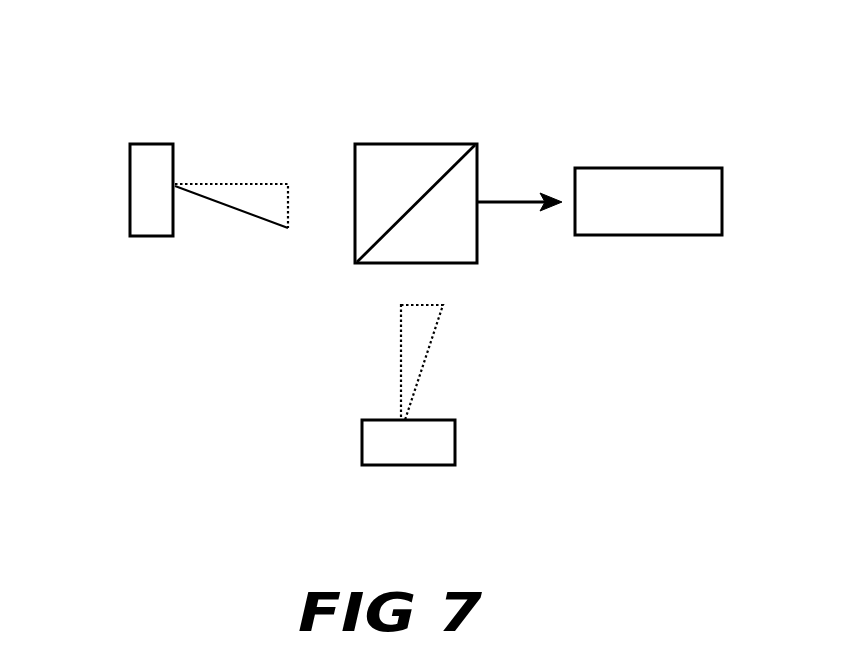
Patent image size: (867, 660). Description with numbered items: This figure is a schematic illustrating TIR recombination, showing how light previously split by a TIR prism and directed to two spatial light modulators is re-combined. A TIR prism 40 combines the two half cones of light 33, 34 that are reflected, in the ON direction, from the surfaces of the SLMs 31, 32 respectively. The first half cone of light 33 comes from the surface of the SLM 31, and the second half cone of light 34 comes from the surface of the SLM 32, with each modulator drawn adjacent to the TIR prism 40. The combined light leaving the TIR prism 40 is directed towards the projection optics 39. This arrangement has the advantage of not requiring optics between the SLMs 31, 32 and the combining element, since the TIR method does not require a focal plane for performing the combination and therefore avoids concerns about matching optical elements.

The SLM 31 is at (130, 215).
The SLM 32 is at (455, 433).
The half cone of light 33 is at (255, 215).
The half cone of light 34 is at (430, 348).
The projection optics 39 is at (652, 235).
The TIR prism 40 is at (412, 144).